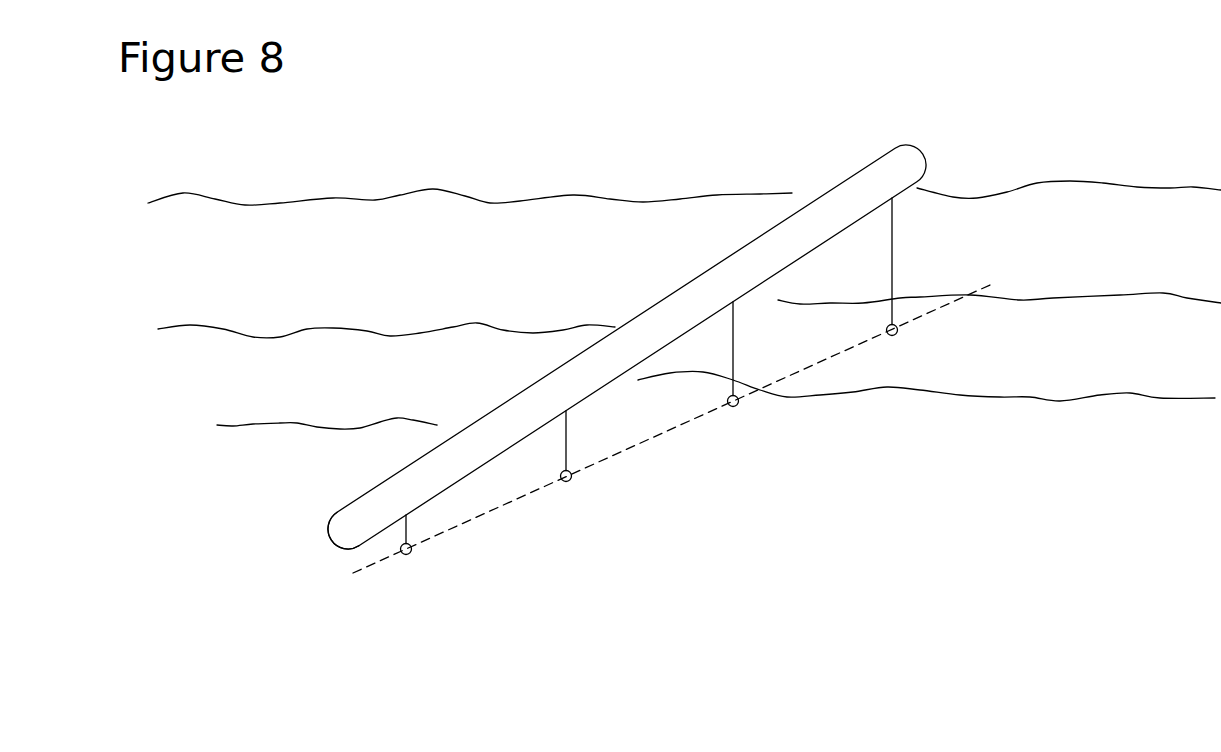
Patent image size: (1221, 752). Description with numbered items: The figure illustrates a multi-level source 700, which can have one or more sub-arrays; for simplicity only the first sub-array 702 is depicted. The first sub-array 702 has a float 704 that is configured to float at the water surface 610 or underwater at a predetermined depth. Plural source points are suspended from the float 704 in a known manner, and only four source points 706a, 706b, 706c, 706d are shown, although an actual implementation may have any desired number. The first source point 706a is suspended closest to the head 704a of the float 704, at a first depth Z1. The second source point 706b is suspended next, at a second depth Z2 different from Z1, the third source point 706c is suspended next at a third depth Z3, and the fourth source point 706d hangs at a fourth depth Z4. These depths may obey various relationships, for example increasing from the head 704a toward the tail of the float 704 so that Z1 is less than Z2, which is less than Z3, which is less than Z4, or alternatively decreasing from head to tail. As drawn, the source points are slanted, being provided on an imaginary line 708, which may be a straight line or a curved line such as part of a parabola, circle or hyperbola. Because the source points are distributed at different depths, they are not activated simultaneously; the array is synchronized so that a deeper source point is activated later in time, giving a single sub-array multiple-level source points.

The multi-level source 700 is at (748, 87).
The water surface 610 is at (373, 215).
The float 704 is at (540, 395).
The head of the float 704a is at (345, 530).
The first sub-array 702 is at (328, 545).
The first source point 706a is at (403, 556).
The second source point 706b is at (563, 483).
The third source point 706c is at (741, 405).
The fourth source point 706d is at (896, 336).
The imaginary line 708 is at (688, 422).
The first depth Z1 is at (412, 521).
The second depth Z2 is at (569, 433).
The third depth Z3 is at (735, 343).
The fourth depth Z4 is at (892, 240).